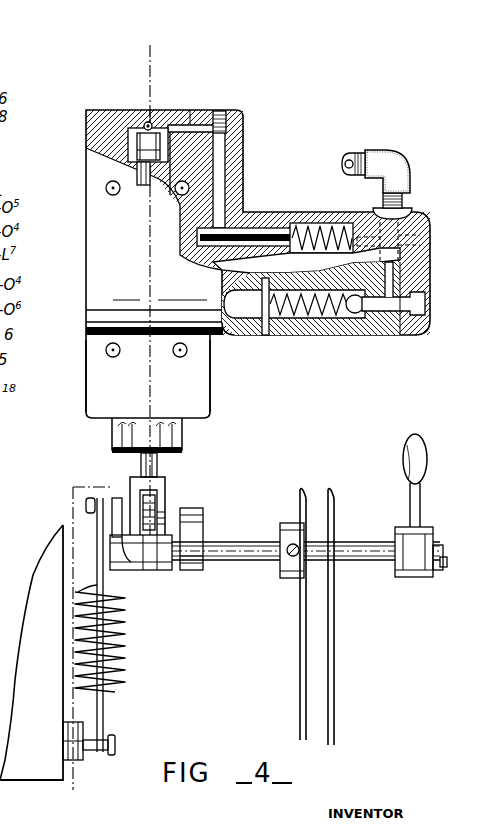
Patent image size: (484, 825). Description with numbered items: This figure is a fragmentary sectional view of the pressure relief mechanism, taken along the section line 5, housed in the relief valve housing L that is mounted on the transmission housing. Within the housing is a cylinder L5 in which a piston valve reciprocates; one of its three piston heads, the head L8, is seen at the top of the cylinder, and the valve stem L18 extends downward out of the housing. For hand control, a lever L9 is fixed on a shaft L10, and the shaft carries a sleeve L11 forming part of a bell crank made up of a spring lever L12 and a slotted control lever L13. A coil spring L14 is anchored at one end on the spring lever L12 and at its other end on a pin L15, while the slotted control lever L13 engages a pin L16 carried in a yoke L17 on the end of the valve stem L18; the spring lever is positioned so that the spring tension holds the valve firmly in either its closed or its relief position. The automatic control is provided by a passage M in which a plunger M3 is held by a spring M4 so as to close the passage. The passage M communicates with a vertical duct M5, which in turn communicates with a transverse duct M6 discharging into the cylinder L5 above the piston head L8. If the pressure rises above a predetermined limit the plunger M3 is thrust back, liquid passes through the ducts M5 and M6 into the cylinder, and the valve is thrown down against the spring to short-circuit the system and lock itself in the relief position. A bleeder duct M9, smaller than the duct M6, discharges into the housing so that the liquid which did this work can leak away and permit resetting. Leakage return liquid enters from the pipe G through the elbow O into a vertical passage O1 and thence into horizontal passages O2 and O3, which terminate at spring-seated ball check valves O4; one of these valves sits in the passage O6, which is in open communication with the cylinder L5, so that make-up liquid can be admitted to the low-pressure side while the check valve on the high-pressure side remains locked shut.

The section line 5 is at (130, 42).
The passage M is at (189, 252).
The plunger M3 is at (258, 213).
The spring M4 is at (325, 223).
The vertical duct M5 is at (228, 152).
The transverse duct M6 is at (187, 126).
The bleeder duct M9 is at (143, 128).
The relief valve housing L is at (182, 322).
The cylinder L5 is at (137, 167).
The piston head L8 is at (133, 160).
The lever L9 is at (413, 460).
The shaft L10 is at (243, 543).
The sleeve L11 is at (160, 553).
The spring lever L12 is at (115, 500).
The slotted control lever L13 is at (145, 560).
The coil spring L14 is at (118, 655).
The pin L15 is at (117, 738).
The pin L16 is at (170, 511).
The yoke L17 is at (160, 491).
The valve stem L18 is at (153, 468).
The pipe G is at (353, 157).
The elbow O is at (395, 171).
The vertical passage O1 is at (394, 277).
The horizontal passage O2 is at (407, 220).
The horizontal passage O3 is at (380, 309).
The spring-seated check valve O4 is at (353, 313).
The passage O6 is at (317, 318).